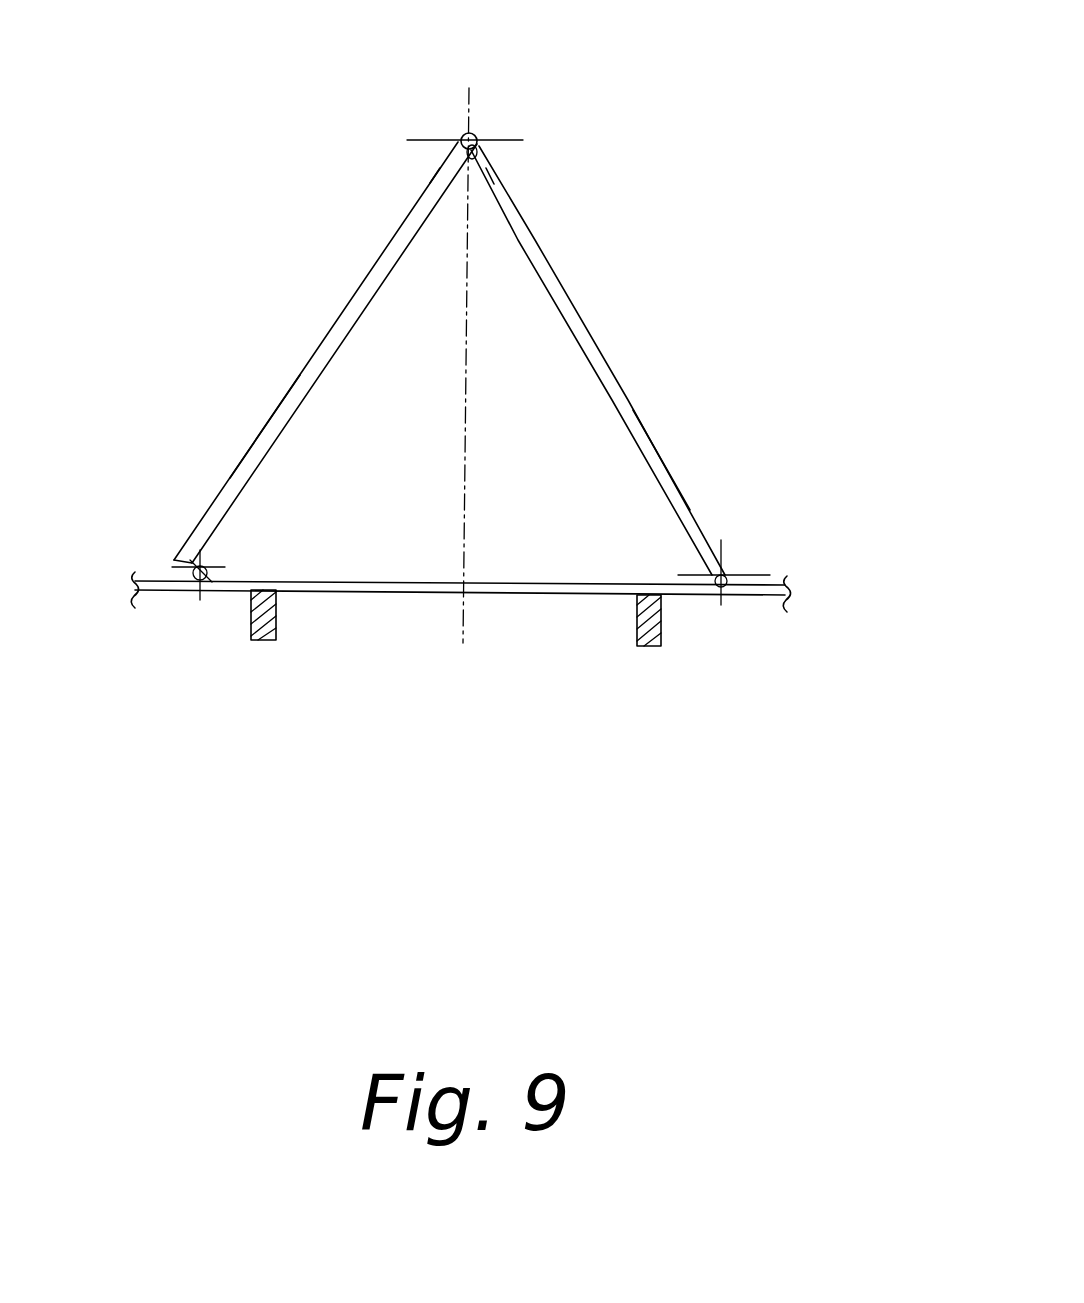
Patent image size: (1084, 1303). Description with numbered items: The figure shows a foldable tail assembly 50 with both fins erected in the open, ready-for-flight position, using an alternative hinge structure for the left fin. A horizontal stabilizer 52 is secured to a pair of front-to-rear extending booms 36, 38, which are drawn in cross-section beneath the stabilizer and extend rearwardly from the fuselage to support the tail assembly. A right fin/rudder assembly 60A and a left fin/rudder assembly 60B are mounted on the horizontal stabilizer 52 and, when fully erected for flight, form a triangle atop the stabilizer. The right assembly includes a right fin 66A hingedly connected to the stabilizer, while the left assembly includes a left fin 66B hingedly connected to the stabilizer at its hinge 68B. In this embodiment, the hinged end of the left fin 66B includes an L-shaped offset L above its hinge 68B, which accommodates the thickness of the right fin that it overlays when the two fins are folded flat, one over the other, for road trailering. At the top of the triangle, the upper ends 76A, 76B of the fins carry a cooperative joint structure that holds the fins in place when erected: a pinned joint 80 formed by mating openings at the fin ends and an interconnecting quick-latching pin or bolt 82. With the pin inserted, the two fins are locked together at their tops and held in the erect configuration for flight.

The tail assembly 50 is at (248, 196).
The quick-latching pin 82 is at (472, 130).
The pinned joint 80 is at (674, 146).
The upper end of left fin 76B is at (425, 165).
The upper end of right fin 76A is at (512, 172).
The left fin/rudder assembly 60B is at (337, 313).
The right fin/rudder assembly 60A is at (562, 262).
The left fin 66B is at (280, 420).
The right fin 66A is at (665, 477).
The hinge 68B is at (200, 576).
The horizontal stabilizer 52 is at (422, 598).
The boom 38 is at (276, 632).
The boom 36 is at (661, 642).
The L-shaped offset L is at (178, 562).